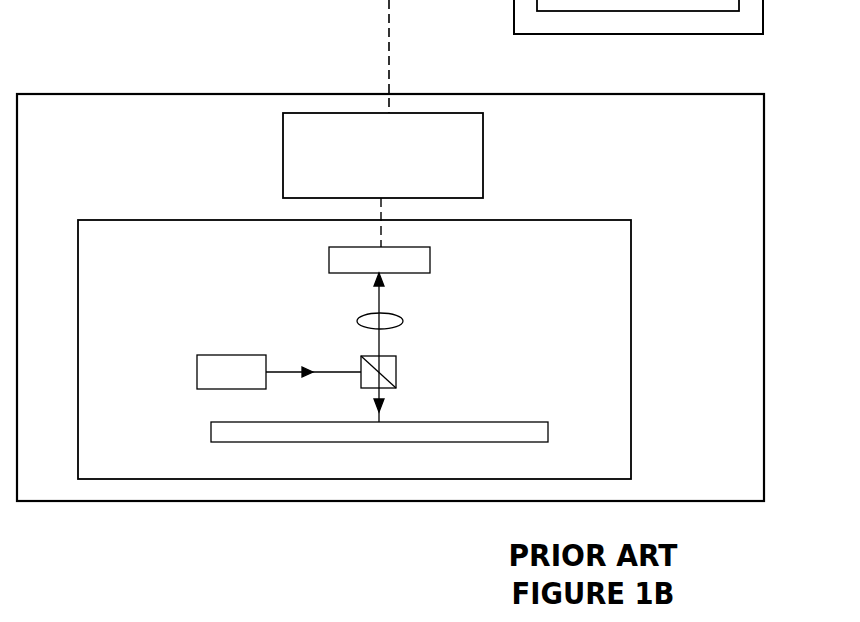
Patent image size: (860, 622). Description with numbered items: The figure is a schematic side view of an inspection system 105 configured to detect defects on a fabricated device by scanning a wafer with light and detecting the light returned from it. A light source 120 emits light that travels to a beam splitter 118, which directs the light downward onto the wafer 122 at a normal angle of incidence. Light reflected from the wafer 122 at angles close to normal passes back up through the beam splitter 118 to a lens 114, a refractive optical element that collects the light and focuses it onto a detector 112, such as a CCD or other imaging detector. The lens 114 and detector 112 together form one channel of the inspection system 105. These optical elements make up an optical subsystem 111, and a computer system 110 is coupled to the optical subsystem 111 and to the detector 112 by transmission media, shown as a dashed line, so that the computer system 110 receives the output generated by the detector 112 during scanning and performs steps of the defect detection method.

The inspection system 105 is at (764, 221).
The computer system 110 is at (368, 190).
The optical subsystem 111 is at (631, 322).
The detector 112 is at (329, 263).
The lens 114 is at (402, 315).
The beam splitter 118 is at (397, 375).
The light source 120 is at (220, 354).
The wafer 122 is at (222, 422).